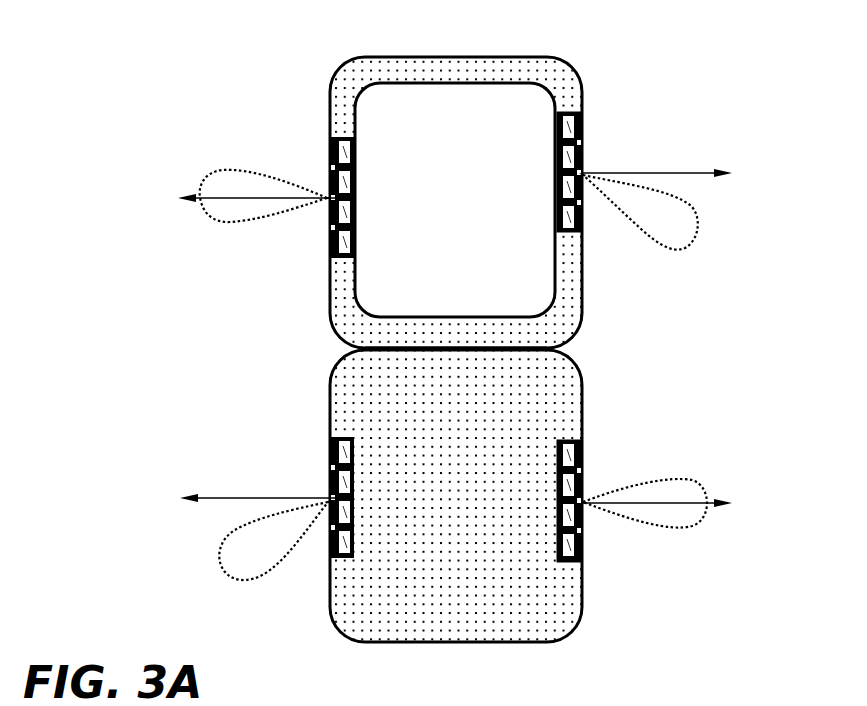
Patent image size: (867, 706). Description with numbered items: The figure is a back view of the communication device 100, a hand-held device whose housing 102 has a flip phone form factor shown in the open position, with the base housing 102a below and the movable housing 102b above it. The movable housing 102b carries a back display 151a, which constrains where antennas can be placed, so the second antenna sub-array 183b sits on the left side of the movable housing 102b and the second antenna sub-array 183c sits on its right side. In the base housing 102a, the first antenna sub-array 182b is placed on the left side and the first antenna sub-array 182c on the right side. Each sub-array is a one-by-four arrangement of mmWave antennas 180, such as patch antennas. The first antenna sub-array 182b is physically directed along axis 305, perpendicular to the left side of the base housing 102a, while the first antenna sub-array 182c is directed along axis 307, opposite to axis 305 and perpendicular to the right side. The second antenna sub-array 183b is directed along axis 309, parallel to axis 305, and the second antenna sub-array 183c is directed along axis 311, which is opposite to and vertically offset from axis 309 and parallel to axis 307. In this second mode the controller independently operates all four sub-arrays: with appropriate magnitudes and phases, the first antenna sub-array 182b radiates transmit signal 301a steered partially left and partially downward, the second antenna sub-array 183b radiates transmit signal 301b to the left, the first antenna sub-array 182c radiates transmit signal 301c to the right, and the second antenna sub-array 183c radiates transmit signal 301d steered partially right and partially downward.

The communication device 100 is at (318, 83).
The housing 102 is at (330, 286).
The base housing 102a is at (328, 595).
The movable housing 102b is at (495, 57).
The back display 151a is at (350, 337).
The mmWave antennas 180 is at (582, 228).
The first antenna sub-array 182b is at (330, 441).
The first antenna sub-array 182c is at (580, 455).
The second antenna sub-array 183b is at (332, 250).
The second antenna sub-array 183c is at (580, 126).
The transmit signal 301a is at (227, 568).
The transmit signal 301b is at (241, 168).
The transmit signal 301c is at (672, 530).
The transmit signal 301d is at (690, 252).
The axis 305 is at (237, 497).
The axis 307 is at (718, 498).
The axis 309 is at (218, 196).
The axis 311 is at (718, 168).